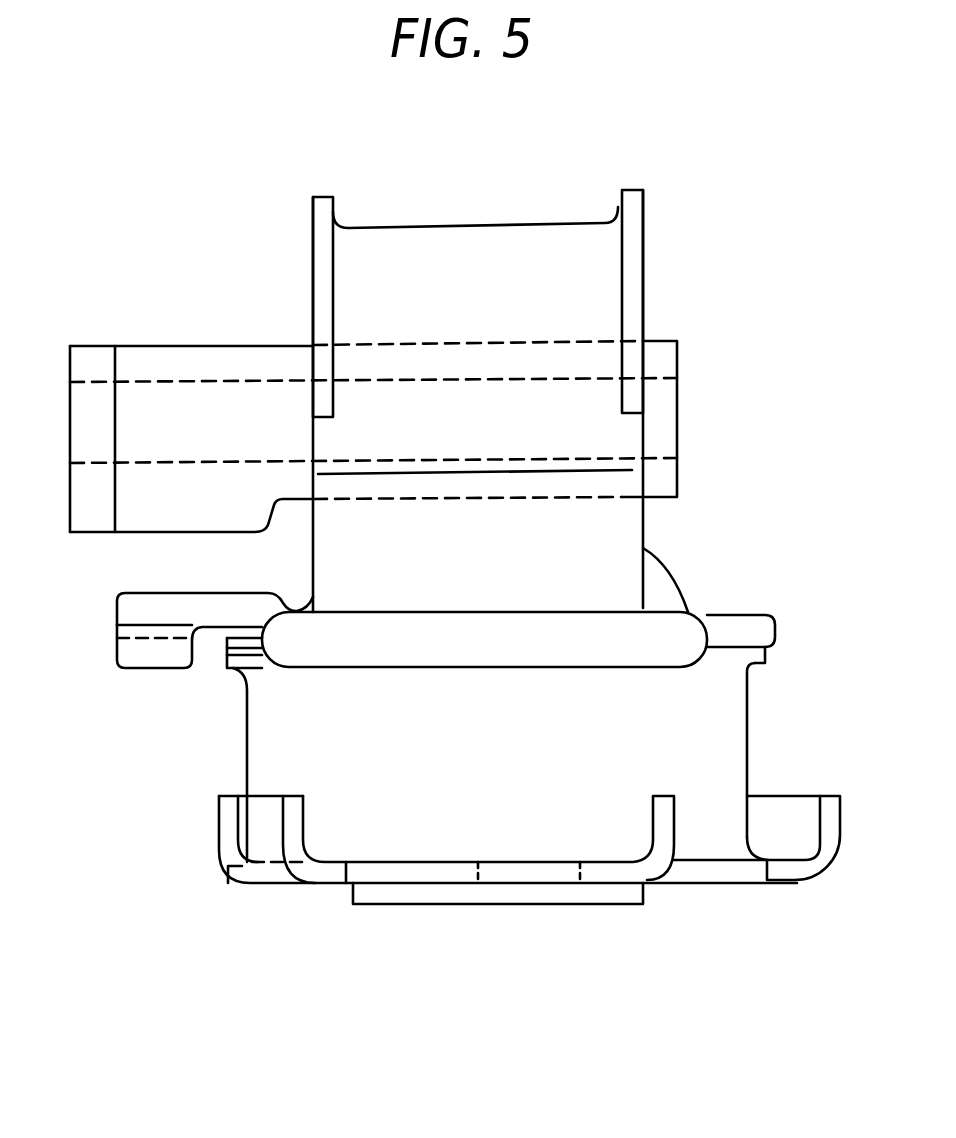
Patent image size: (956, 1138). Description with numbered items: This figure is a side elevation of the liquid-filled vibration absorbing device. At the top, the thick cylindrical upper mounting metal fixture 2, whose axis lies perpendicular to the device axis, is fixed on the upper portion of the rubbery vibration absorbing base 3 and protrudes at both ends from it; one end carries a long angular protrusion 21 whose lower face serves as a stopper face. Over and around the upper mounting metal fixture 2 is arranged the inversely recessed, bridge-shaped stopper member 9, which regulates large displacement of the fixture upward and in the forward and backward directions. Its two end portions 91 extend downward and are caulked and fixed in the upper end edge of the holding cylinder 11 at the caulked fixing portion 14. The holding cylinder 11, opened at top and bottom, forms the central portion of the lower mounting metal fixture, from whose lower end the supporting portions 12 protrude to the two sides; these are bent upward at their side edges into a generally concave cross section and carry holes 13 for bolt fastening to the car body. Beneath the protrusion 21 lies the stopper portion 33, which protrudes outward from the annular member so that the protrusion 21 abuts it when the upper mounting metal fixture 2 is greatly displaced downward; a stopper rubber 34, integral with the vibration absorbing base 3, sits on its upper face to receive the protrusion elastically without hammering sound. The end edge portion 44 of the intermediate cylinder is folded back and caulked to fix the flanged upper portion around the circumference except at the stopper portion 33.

The upper mounting metal fixture 2 is at (373, 379).
The protrusion 21 is at (160, 420).
The stopper member 9 is at (600, 278).
The end portion 91 is at (600, 592).
The vibration absorbing base 3 is at (662, 590).
The stopper rubber 34 is at (130, 605).
The stopper portion 33 is at (120, 635).
The caulked fixing portion 14 is at (315, 652).
The end edge portion 44 is at (758, 636).
The holding cylinder 11 is at (723, 737).
The supporting portion 12 is at (407, 868).
The hole 13 is at (570, 868).